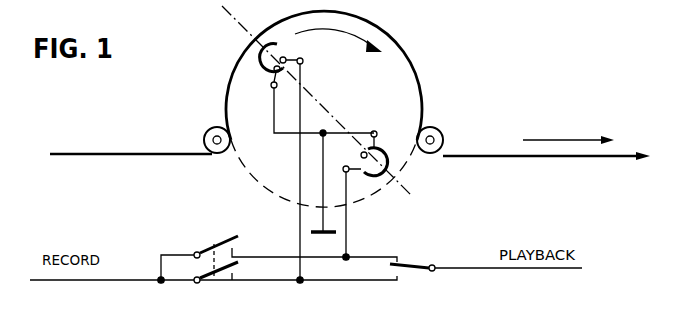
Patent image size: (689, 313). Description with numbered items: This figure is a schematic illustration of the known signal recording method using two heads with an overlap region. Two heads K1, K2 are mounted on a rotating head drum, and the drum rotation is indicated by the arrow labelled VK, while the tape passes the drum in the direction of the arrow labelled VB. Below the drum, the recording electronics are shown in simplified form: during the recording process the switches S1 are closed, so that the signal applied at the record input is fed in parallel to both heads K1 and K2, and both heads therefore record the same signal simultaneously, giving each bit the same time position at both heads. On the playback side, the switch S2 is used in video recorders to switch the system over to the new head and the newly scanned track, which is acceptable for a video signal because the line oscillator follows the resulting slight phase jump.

The head K1 is at (376, 194).
The head K2 is at (292, 159).
The switches S1 is at (215, 241).
The switch S2 is at (418, 263).
The head drum rotation velocity VK is at (363, 71).
The tape velocity VB is at (556, 140).